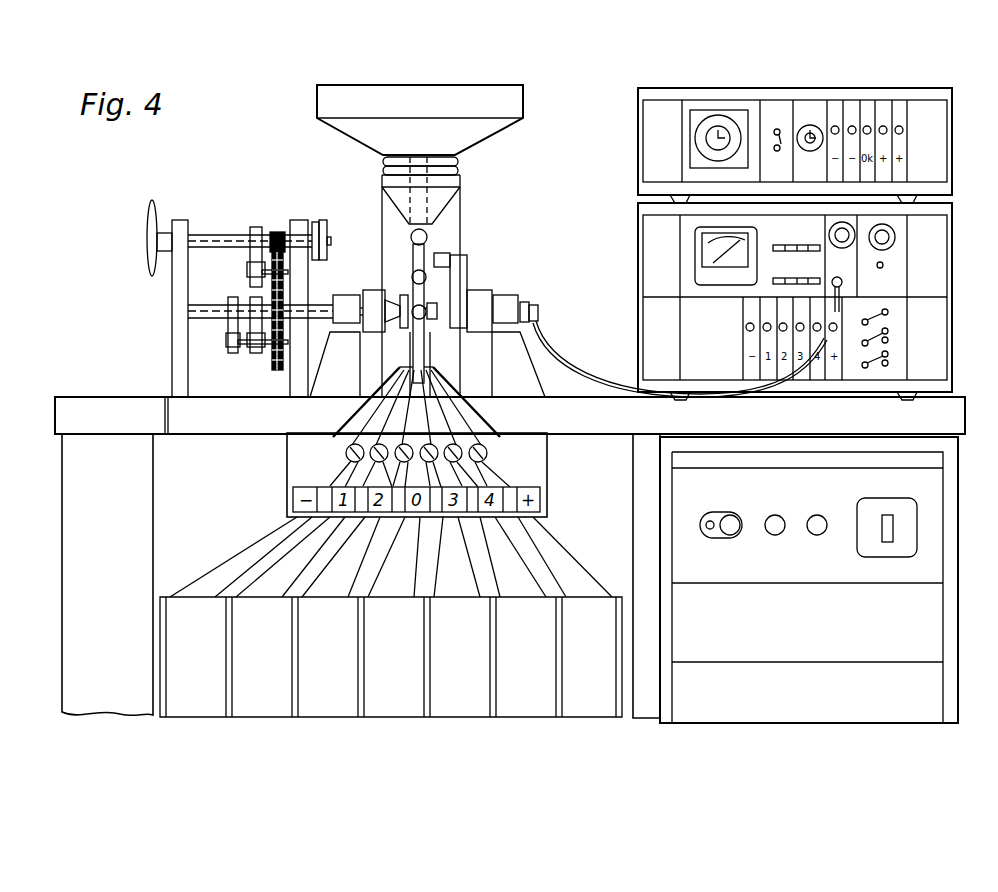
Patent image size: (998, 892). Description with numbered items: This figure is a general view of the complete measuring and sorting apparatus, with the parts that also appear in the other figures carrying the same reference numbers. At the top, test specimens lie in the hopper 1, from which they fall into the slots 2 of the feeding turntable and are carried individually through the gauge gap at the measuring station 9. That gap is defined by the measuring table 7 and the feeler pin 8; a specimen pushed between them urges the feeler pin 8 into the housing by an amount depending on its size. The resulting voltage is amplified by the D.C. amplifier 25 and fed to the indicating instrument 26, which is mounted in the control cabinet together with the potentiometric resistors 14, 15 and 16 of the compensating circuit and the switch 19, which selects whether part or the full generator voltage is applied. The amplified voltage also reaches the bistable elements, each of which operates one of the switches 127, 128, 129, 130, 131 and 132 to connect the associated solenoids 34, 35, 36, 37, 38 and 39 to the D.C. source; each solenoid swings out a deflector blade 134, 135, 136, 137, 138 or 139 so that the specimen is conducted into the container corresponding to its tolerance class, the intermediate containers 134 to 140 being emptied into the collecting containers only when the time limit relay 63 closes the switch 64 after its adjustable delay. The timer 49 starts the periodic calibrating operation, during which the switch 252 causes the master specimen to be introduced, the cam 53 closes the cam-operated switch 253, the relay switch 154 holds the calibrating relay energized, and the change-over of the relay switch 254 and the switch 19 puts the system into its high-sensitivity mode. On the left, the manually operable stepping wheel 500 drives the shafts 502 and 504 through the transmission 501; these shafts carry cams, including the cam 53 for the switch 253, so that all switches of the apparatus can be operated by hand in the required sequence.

The hopper 1 is at (518, 96).
The slots 2 is at (422, 345).
The measuring table 7 is at (403, 293).
The feeler pin 8 is at (444, 303).
The measuring station 9 is at (388, 293).
The potentiometric resistor 14 is at (884, 267).
The potentiometric resistor 15 is at (856, 226).
The potentiometric resistor 16 is at (895, 238).
The switch 19 is at (868, 315).
The D.C. amplifier 25 is at (797, 223).
The indicating instrument 26 is at (702, 237).
The solenoid 34 is at (344, 457).
The solenoid 35 is at (372, 463).
The solenoid 36 is at (400, 463).
The solenoid 37 is at (432, 463).
The solenoid 38 is at (458, 463).
The solenoid 39 is at (486, 466).
The timer 49 is at (723, 122).
The cam 53 is at (233, 300).
The time limit relay 63 is at (813, 126).
The switch 64 is at (810, 138).
The switch 127 is at (746, 325).
The switch 128 is at (763, 328).
The switch 129 is at (780, 332).
The switch 130 is at (798, 333).
The switch 131 is at (815, 333).
The switch 132 is at (832, 333).
The deflector blade / intermediate container 134 is at (348, 450).
The deflector blade / intermediate container 135 is at (378, 445).
The deflector blade / intermediate container 136 is at (403, 445).
The deflector blade / intermediate container 137 is at (456, 445).
The deflector blade / intermediate container 138 is at (480, 445).
The deflector blade / intermediate container 139 is at (487, 452).
The intermediate container 140 is at (524, 462).
The relay switch 154 is at (864, 342).
The switch 252 is at (778, 128).
The cam-operated switch 253 is at (234, 352).
The relay switch 254 is at (880, 358).
The stepping wheel 500 is at (148, 259).
The transmission 501 is at (283, 295).
The shaft 502 is at (240, 236).
The lower shaft 504 is at (168, 313).